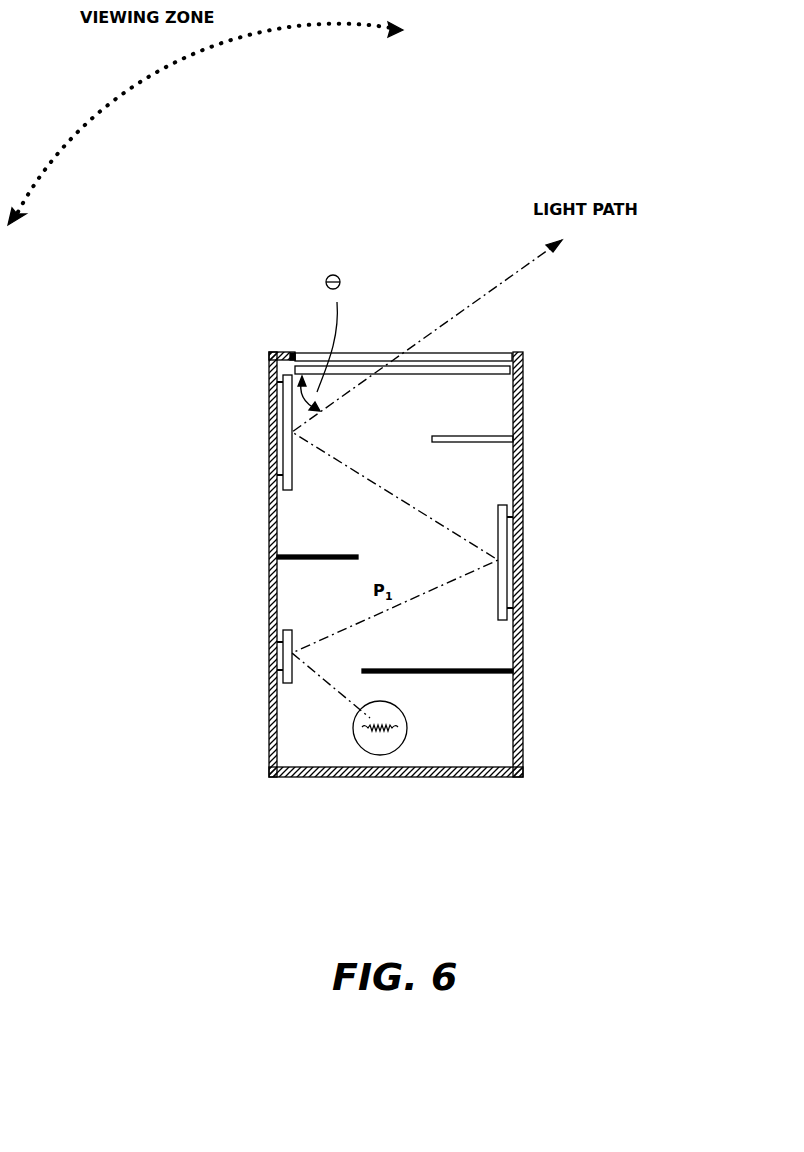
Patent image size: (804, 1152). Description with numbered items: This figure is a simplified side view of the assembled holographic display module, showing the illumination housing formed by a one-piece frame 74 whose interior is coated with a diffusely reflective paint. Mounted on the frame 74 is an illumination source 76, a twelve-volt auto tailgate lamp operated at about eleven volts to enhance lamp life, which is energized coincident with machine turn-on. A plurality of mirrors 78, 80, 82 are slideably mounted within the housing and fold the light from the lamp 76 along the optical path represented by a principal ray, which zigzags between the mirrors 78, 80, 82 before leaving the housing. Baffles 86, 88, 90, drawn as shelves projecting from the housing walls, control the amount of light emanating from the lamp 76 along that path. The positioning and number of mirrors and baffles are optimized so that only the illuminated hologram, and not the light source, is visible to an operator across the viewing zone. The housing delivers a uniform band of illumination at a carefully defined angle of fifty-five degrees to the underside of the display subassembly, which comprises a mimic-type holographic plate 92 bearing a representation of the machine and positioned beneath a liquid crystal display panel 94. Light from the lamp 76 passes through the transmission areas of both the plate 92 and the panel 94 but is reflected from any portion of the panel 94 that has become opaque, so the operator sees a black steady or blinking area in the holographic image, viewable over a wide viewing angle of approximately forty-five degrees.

The one-piece frame 74 is at (522, 458).
The illumination source 76 is at (362, 740).
The mirror 78 is at (287, 658).
The mirror 80 is at (505, 590).
The mirror 82 is at (283, 442).
The baffle 86 is at (457, 673).
The baffle 88 is at (325, 555).
The baffle 90 is at (468, 442).
The holographic plate 92 is at (477, 375).
The liquid crystal display panel 94 is at (455, 352).